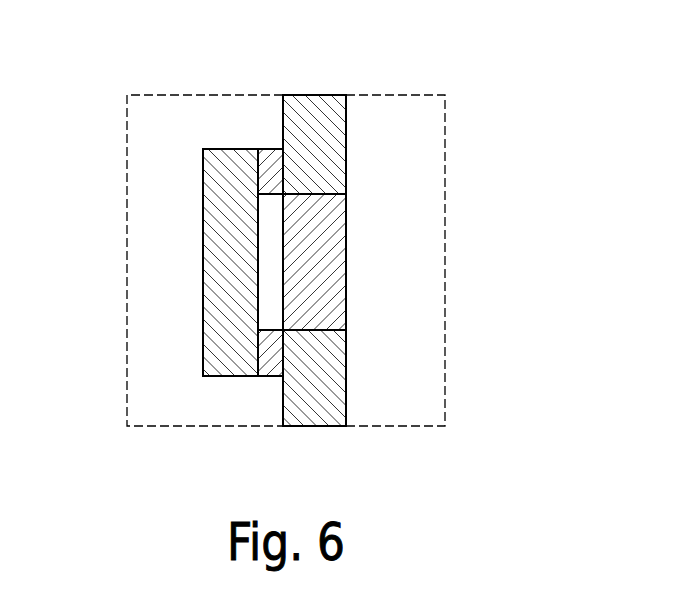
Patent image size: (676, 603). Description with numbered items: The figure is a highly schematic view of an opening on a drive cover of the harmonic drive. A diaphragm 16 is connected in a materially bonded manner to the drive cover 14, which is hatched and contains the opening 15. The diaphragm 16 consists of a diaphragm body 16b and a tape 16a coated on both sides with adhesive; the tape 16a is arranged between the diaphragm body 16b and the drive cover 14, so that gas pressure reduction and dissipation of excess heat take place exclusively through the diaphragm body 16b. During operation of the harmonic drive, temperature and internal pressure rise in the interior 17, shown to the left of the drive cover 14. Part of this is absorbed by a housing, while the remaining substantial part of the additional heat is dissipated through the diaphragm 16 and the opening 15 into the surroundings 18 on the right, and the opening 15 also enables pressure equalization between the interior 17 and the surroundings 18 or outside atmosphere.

The drive cover 14 is at (330, 140).
The opening 15 is at (312, 328).
The diaphragm 16 is at (201, 141).
The tape 16a is at (272, 367).
The diaphragm body 16b is at (233, 311).
The interior 17 is at (181, 264).
The surroundings 18 is at (422, 269).